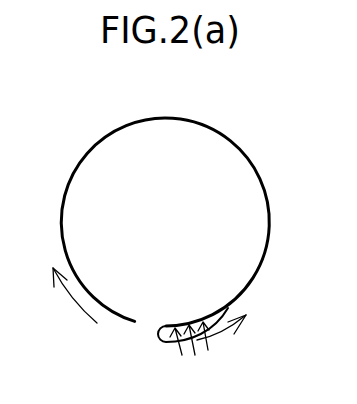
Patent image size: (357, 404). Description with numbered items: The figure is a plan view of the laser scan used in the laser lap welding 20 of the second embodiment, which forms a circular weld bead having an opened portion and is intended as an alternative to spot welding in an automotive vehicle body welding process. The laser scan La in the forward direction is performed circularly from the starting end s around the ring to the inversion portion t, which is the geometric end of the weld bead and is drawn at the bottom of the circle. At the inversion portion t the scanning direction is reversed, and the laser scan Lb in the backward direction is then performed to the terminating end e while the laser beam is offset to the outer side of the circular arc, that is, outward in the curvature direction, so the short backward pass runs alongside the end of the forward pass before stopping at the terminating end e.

The laser lap welding 20 is at (98, 133).
The starting end s is at (138, 302).
The terminating end e is at (257, 302).
The inversion portion t is at (188, 342).
The laser scan in the forward direction La is at (66, 301).
The laser scan in the backward direction Lb is at (236, 334).